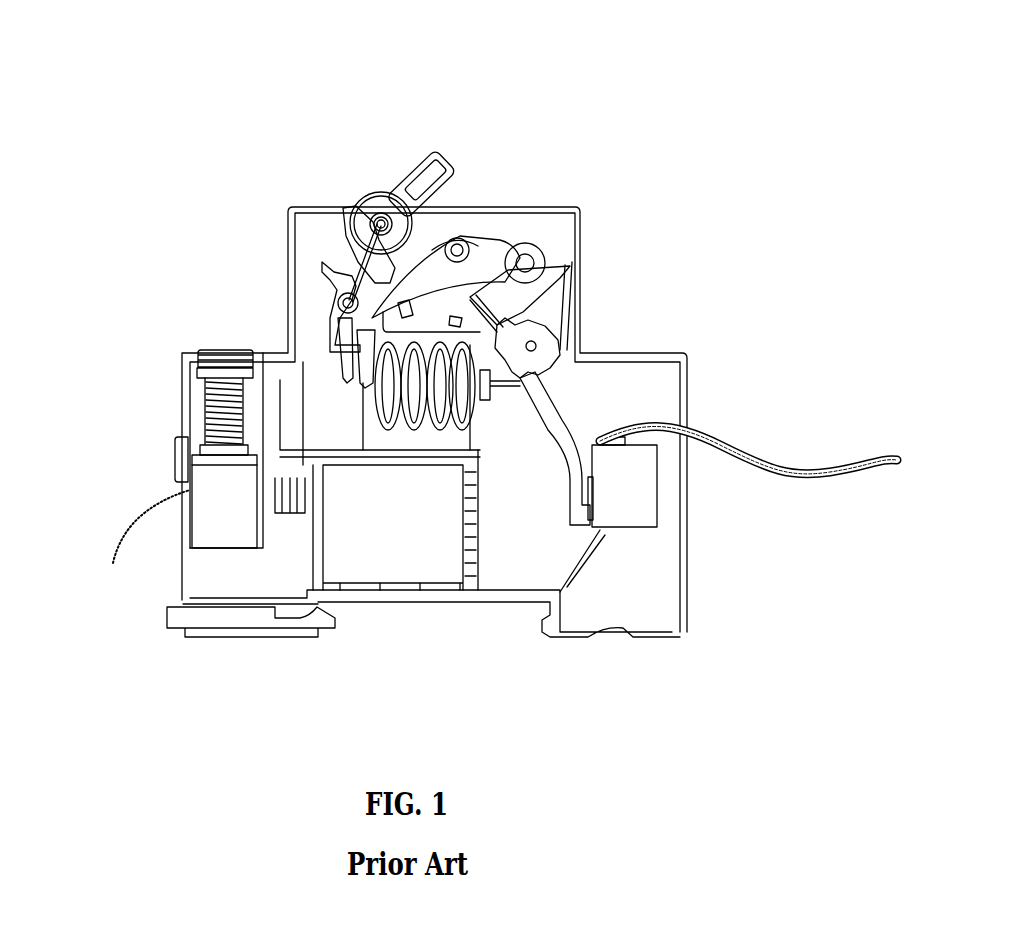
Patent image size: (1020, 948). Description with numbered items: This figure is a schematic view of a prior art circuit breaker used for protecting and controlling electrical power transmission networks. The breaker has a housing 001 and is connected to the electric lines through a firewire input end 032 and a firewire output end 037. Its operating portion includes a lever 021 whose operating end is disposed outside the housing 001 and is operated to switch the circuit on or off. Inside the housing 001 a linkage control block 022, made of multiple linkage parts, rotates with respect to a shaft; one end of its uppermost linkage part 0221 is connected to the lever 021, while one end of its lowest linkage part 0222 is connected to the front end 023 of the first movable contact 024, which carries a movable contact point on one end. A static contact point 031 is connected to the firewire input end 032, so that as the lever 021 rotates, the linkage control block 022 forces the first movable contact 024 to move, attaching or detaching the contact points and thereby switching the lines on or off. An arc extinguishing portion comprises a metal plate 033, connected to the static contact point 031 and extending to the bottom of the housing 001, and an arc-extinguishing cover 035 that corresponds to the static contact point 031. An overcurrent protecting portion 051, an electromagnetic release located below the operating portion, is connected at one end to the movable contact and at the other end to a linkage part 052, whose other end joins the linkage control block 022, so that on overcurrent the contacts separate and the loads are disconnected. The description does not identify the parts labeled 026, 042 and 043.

The housing 001 is at (285, 245).
The lever 021 is at (418, 160).
The uppermost linkage part 0221 is at (392, 272).
The linkage control block 022 is at (483, 237).
The lowest linkage part 0222 is at (540, 322).
The front end of the first movable contact 023 is at (548, 378).
The first movable contact 024 is at (575, 448).
The trip lever 026 is at (353, 223).
The overcurrent protecting portion 051 is at (372, 368).
The linkage part 052 is at (343, 370).
The arc-extinguishing cover 035 is at (388, 524).
The firewire output end 037 is at (208, 518).
The conductor path 043 is at (140, 508).
The flexible braided conductor 042 is at (763, 447).
The firewire input end 032 is at (637, 473).
The metal plate 033 is at (567, 598).
The static contact point 031 is at (603, 530).